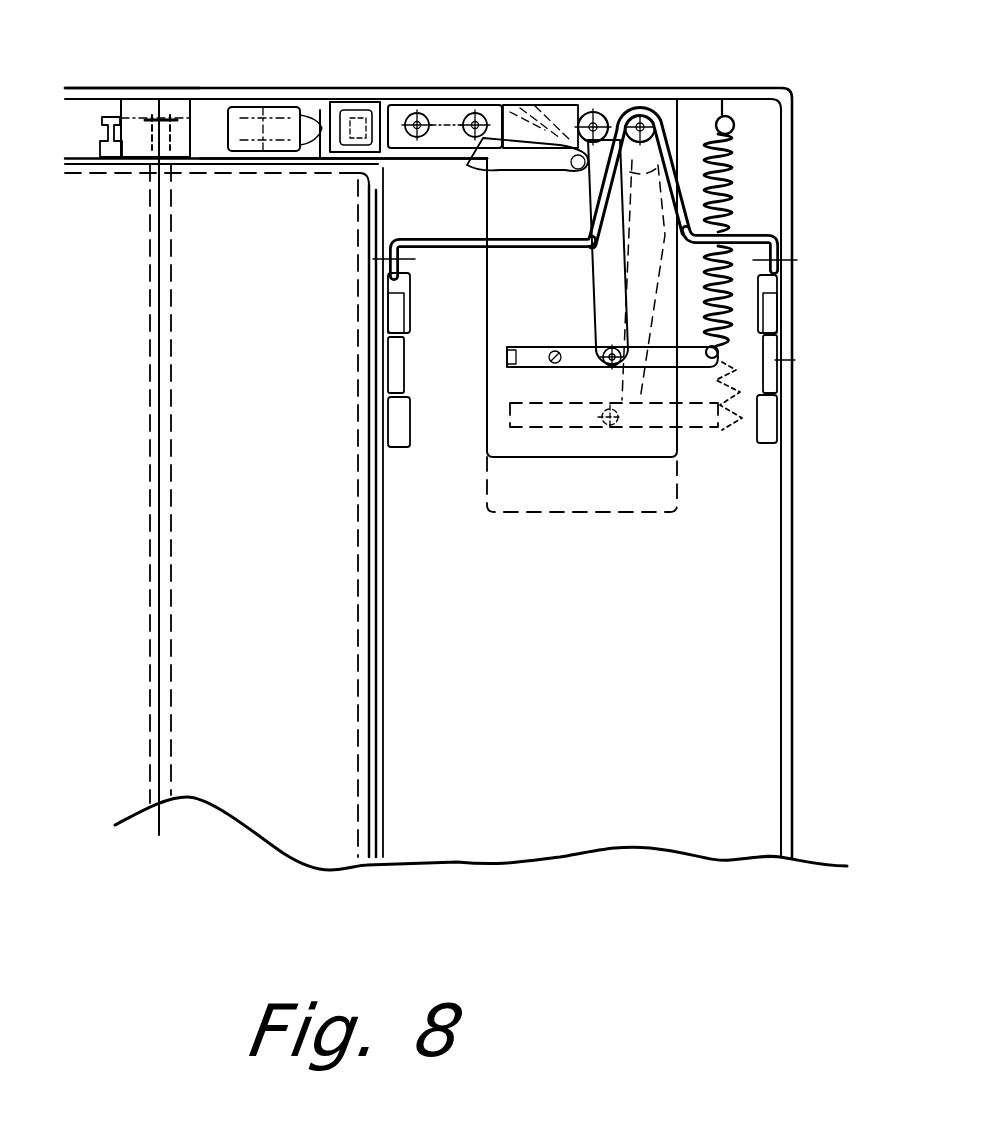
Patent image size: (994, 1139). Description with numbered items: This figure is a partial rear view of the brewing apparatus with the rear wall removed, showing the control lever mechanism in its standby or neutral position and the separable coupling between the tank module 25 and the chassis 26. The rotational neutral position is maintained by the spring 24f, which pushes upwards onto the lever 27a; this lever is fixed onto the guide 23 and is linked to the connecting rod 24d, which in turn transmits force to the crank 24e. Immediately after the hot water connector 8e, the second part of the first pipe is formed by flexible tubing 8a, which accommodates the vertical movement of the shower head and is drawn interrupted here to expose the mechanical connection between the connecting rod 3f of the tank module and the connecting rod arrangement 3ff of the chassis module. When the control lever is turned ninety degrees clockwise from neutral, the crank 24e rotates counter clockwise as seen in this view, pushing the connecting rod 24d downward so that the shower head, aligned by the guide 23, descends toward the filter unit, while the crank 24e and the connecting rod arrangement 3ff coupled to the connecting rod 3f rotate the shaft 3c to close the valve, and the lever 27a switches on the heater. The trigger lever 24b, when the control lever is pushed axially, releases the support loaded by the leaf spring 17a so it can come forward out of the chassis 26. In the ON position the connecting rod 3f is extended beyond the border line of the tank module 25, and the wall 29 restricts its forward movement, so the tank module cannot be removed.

The chassis 26 is at (96, 92).
The hot water connector 8e is at (188, 101).
The flexible tubing 8a is at (298, 108).
The connecting rod arrangement 3ff is at (545, 113).
The crank 24e is at (601, 111).
The trigger lever 24b is at (662, 106).
The spring 24f is at (726, 157).
The connecting rod 24d is at (600, 263).
The guide 23 is at (515, 205).
The connecting rod 3f is at (340, 160).
The wall 29 is at (404, 178).
The lever 27a is at (530, 353).
The leaf spring 17a is at (768, 367).
The shaft 3c is at (158, 421).
The tank module 25 is at (303, 813).